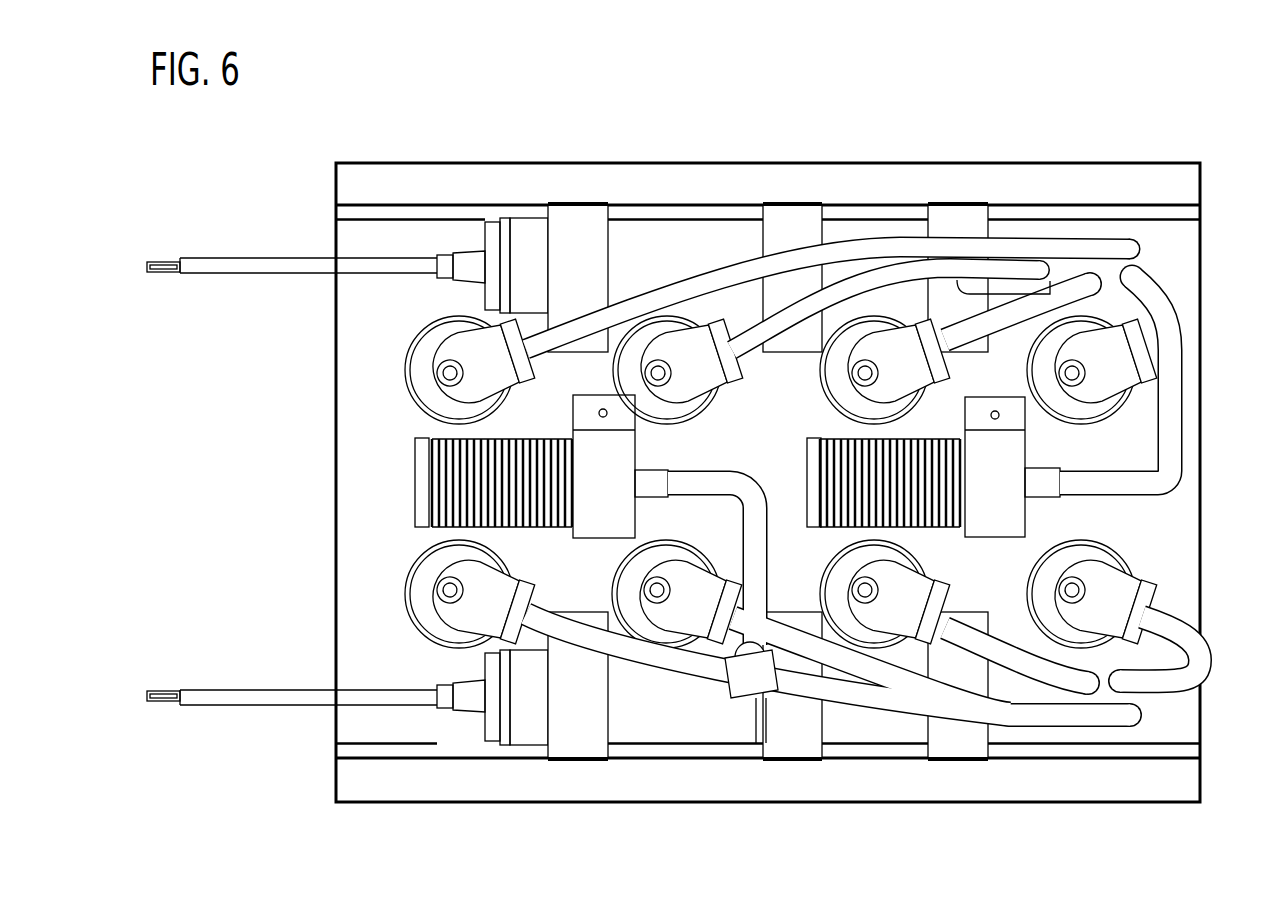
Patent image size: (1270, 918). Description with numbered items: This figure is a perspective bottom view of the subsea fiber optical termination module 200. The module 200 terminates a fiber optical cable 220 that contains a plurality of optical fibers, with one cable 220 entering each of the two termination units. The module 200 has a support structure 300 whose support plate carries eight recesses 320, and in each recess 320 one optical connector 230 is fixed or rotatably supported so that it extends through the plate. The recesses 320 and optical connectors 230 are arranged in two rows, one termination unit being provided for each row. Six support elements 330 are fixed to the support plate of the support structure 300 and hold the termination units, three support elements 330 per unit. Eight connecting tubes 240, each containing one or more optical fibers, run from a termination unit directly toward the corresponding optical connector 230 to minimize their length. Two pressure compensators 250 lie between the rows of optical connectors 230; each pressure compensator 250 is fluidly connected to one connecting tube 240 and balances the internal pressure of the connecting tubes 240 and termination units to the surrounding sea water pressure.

The subsea fiber optical termination module 200 is at (1146, 113).
The fiber optical cable 220 is at (235, 258).
The optical connector 230 is at (460, 358).
The connecting tube 240 is at (655, 660).
The pressure compensator 250 is at (455, 482).
The support structure 300 is at (856, 142).
The recess 320 is at (830, 557).
The support element 330 is at (580, 232).